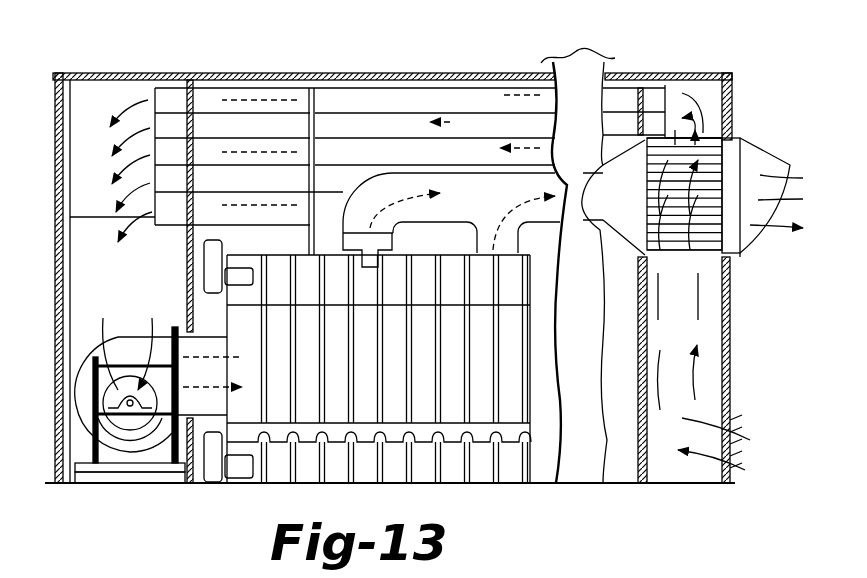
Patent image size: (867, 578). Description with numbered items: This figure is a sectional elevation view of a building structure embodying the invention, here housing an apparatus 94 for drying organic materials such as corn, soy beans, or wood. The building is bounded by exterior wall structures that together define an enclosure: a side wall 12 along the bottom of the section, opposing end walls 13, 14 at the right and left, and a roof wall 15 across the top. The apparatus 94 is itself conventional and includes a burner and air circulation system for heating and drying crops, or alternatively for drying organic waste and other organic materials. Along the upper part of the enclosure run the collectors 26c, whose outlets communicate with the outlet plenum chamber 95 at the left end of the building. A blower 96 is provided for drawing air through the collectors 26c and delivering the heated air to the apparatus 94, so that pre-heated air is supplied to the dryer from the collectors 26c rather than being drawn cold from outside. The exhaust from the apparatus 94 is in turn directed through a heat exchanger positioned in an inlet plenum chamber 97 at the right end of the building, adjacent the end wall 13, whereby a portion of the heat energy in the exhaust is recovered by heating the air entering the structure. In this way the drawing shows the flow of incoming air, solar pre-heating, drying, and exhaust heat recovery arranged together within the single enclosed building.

The side wall 12 is at (546, 485).
The end wall 13 is at (721, 331).
The end wall 14 is at (118, 272).
The roof wall 15 is at (486, 76).
The collectors 26c is at (360, 130).
The apparatus for drying organic materials 94 is at (510, 378).
The outlet plenum chamber 95 is at (89, 126).
The blower 96 is at (136, 347).
The inlet plenum chamber 97 is at (681, 450).